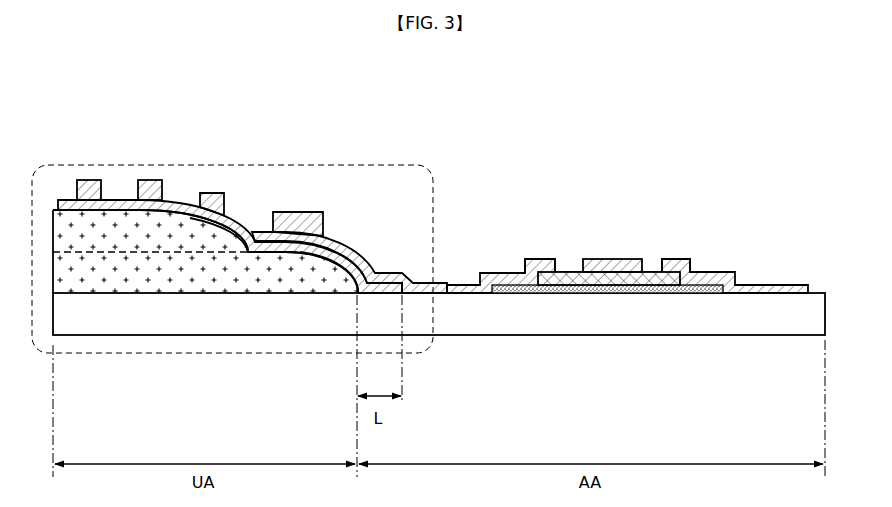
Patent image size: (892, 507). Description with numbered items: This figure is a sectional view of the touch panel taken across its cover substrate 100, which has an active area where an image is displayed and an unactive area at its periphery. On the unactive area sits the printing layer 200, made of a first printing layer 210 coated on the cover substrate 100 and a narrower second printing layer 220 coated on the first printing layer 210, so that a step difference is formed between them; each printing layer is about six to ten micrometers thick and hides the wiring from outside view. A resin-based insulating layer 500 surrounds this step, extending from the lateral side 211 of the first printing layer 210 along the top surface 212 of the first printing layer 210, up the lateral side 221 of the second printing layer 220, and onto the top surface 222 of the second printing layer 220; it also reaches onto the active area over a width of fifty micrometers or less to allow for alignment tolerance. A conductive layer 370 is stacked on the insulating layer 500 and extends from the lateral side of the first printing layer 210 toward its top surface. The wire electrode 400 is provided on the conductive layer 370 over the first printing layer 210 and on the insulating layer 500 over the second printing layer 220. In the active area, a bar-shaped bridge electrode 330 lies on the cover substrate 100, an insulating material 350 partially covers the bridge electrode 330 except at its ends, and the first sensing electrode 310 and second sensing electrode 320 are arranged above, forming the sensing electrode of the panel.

The cover substrate 100 is at (283, 318).
The printing layer 200 is at (108, 400).
The first printing layer 210 is at (190, 277).
The lateral side of the first printing layer 211 is at (335, 278).
The top surface of the first printing layer 212 is at (216, 255).
The second printing layer 220 is at (104, 245).
The lateral side of the second printing layer 221 is at (248, 222).
The top surface of the second printing layer 222 is at (107, 233).
The first sensing electrode 310 is at (610, 259).
The second sensing electrode 320 is at (540, 259).
The bridge electrode 330 is at (646, 295).
The insulating material 350 is at (585, 297).
The conductive layer 370 is at (353, 262).
The wire electrode 400 is at (90, 180).
The insulating layer 500 is at (185, 205).